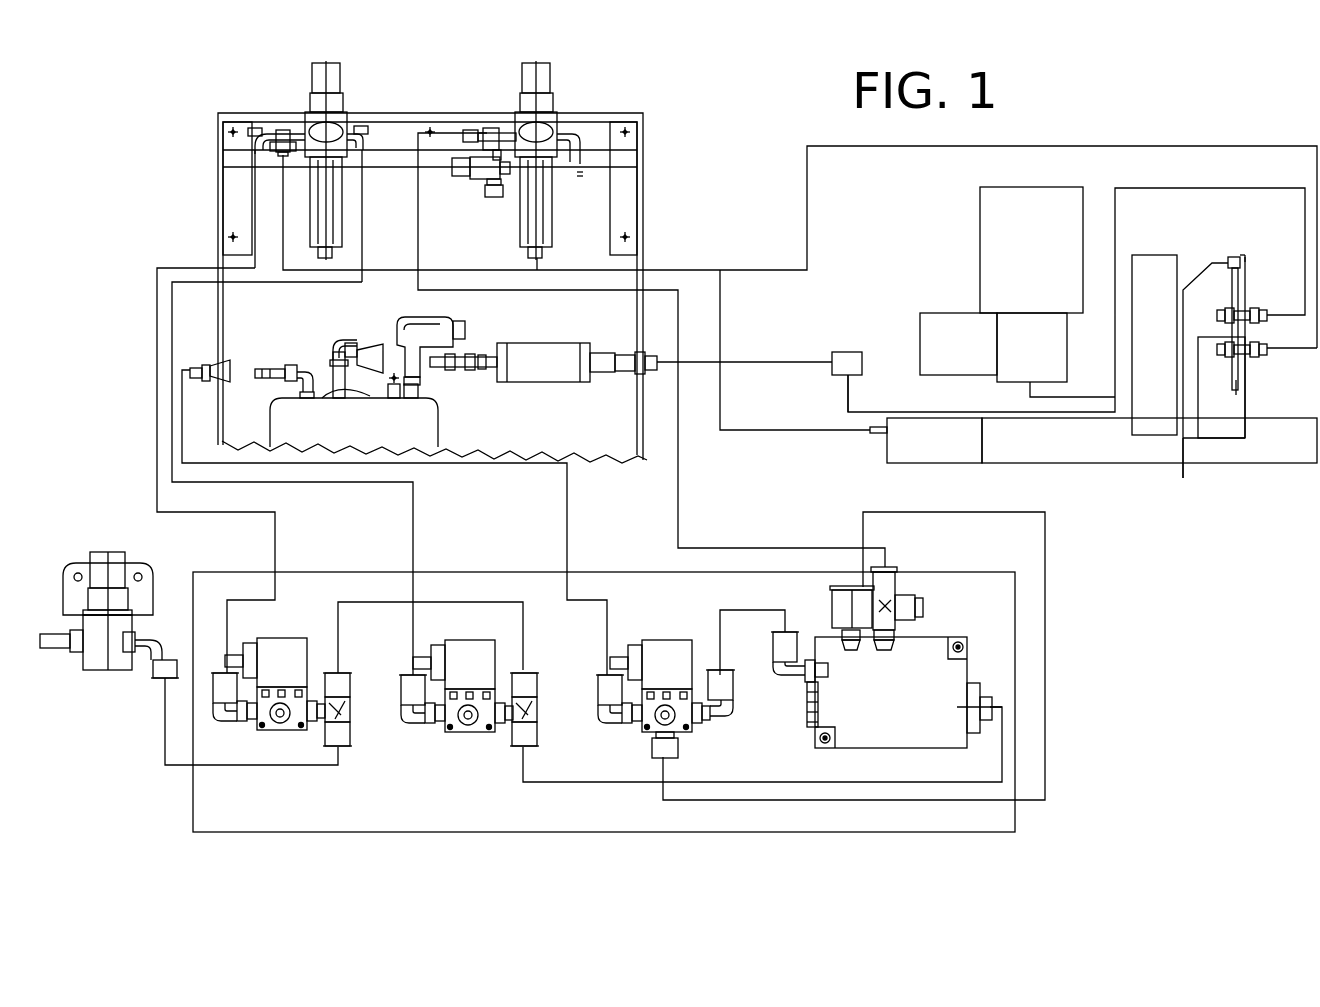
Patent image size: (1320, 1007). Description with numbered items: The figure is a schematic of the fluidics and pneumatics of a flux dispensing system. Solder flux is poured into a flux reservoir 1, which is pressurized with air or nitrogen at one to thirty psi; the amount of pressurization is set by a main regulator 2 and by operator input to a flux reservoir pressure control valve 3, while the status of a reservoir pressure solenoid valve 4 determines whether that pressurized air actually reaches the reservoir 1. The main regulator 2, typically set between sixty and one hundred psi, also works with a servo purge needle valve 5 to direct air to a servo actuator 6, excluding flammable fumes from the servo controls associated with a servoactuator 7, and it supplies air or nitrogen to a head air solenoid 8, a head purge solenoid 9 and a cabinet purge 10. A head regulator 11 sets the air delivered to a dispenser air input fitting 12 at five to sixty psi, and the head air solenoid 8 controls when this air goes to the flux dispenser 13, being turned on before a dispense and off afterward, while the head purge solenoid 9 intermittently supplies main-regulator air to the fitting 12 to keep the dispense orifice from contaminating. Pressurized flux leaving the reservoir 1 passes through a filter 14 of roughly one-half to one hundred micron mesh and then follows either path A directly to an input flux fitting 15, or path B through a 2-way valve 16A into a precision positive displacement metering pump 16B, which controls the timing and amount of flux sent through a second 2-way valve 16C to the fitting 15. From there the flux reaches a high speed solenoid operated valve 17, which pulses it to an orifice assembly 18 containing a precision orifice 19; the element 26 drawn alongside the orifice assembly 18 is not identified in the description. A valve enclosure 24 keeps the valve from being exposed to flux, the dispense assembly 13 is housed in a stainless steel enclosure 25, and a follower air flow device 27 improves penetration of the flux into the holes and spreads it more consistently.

The flux reservoir 1 is at (432, 398).
The main regulator 2 is at (556, 97).
The flux reservoir pressure control valve 3 is at (886, 671).
The reservoir pressure solenoid valve 4 is at (677, 627).
The servo purge needle valve 5 is at (482, 182).
The servo actuator 6 is at (887, 448).
The servoactuator 7 is at (1062, 463).
The head air solenoid 8 is at (442, 722).
The head purge solenoid 9 is at (257, 728).
The cabinet purge 10 is at (123, 552).
The head regulator 11 is at (307, 91).
The dispenser air input fitting 12 is at (1265, 364).
The flux dispenser 13 is at (1246, 268).
The filter 14 is at (543, 376).
The input flux fitting 15 is at (1262, 317).
The 2-way valve 16A is at (958, 344).
The precision positive displacement metering pump 16B is at (1031, 237).
The 2-way valve 16C is at (1048, 347).
The high speed solenoid operated valve 17 is at (1240, 390).
The orifice assembly 18 is at (1263, 247).
The precision orifice 19 is at (1230, 256).
The valve enclosure 24 is at (1200, 408).
The stainless steel enclosure 25 is at (1165, 466).
The tube 26 is at (1236, 290).
The follower air flow device 27 is at (1152, 332).
The path A is at (880, 357).
The path B is at (847, 396).